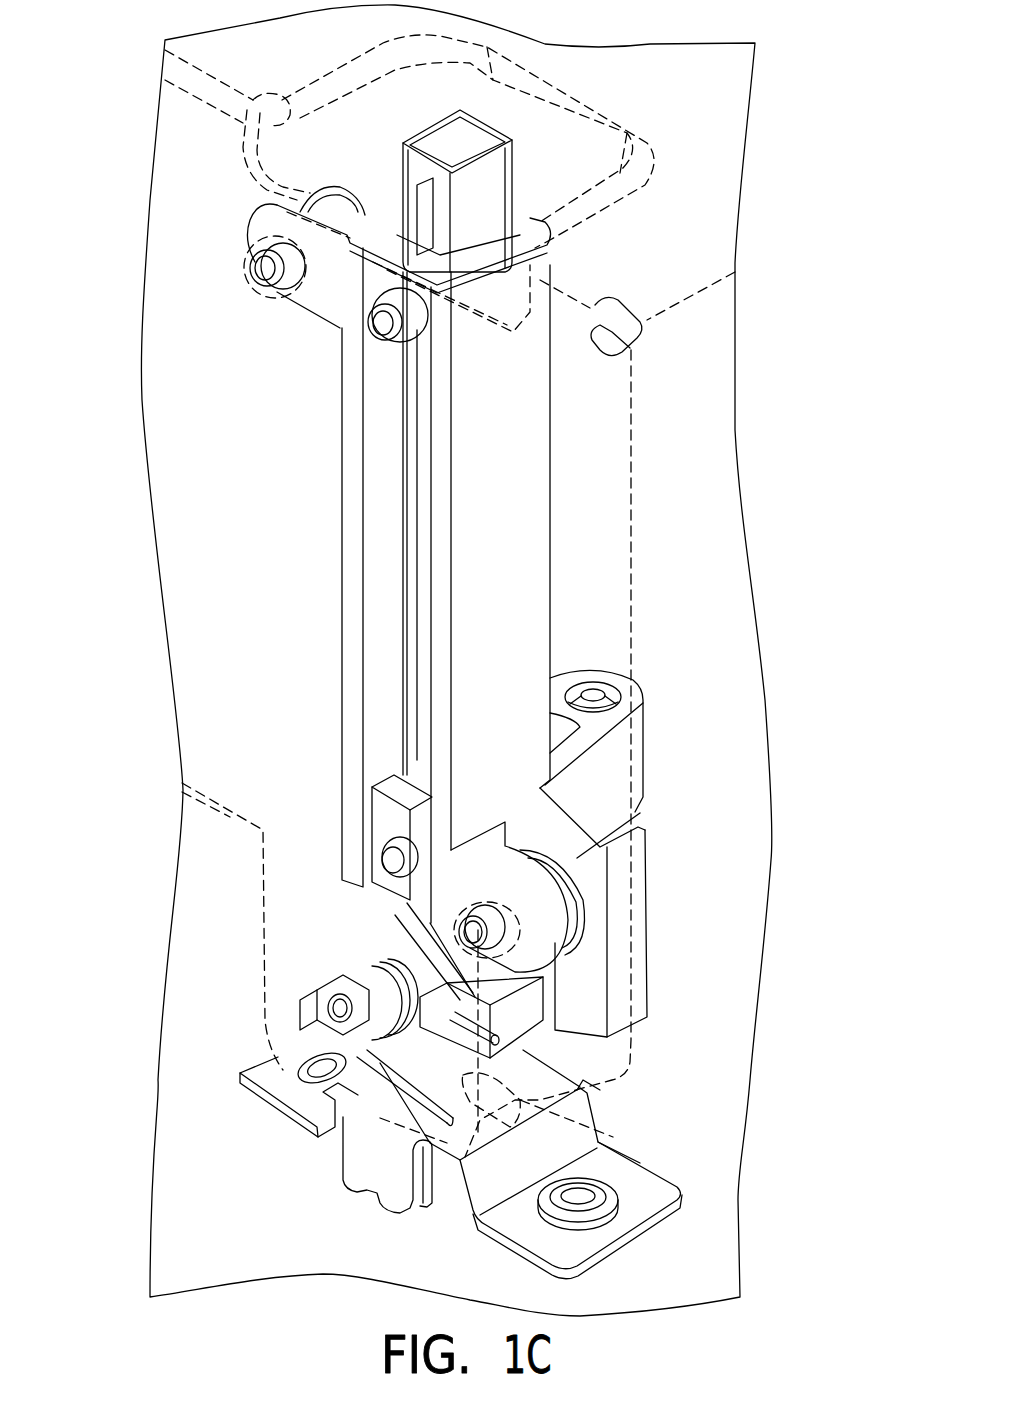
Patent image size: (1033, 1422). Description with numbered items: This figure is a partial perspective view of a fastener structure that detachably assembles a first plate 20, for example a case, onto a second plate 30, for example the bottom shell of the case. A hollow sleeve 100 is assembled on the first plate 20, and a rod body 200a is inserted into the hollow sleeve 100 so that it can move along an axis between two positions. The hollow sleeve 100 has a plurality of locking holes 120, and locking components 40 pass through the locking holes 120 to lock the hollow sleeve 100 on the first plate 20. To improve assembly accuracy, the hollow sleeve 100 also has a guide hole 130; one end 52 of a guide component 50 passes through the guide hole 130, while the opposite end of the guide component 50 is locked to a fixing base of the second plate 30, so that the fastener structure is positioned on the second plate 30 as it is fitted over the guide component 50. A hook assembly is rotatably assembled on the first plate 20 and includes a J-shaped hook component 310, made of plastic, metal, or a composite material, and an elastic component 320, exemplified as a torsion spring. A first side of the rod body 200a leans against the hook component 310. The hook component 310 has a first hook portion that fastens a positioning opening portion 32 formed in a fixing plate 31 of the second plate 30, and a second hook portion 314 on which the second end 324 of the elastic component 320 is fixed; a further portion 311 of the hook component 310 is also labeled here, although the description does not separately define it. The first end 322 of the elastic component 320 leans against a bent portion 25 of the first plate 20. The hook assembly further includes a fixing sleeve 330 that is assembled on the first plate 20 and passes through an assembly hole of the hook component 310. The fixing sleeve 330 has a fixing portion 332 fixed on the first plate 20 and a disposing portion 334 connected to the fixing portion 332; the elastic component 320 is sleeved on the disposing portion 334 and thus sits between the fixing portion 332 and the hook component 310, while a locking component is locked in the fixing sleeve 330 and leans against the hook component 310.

The first plate 20 is at (659, 57).
The rod body 200a is at (452, 135).
The locking components 40 is at (340, 200).
The locking holes 120 is at (318, 260).
The hollow sleeve 100 is at (525, 580).
The one end 52 is at (595, 692).
The guide hole 130 is at (612, 688).
The guide component 50 is at (637, 932).
The slanted surface 311 is at (412, 912).
The hook component 310 is at (378, 937).
The elastic component 320 is at (236, 981).
The fixing sleeve 330 is at (236, 996).
The disposing portion 334 is at (340, 963).
The fixing portion 332 is at (342, 963).
The fixing plate 31 is at (280, 1070).
The second plate 30 is at (393, 1171).
The second hook portion 314 is at (407, 1030).
The first end 322 is at (450, 1130).
The second end 324 is at (577, 1090).
The bent portion 25 is at (610, 1137).
The positioning opening portion 32 is at (597, 1147).